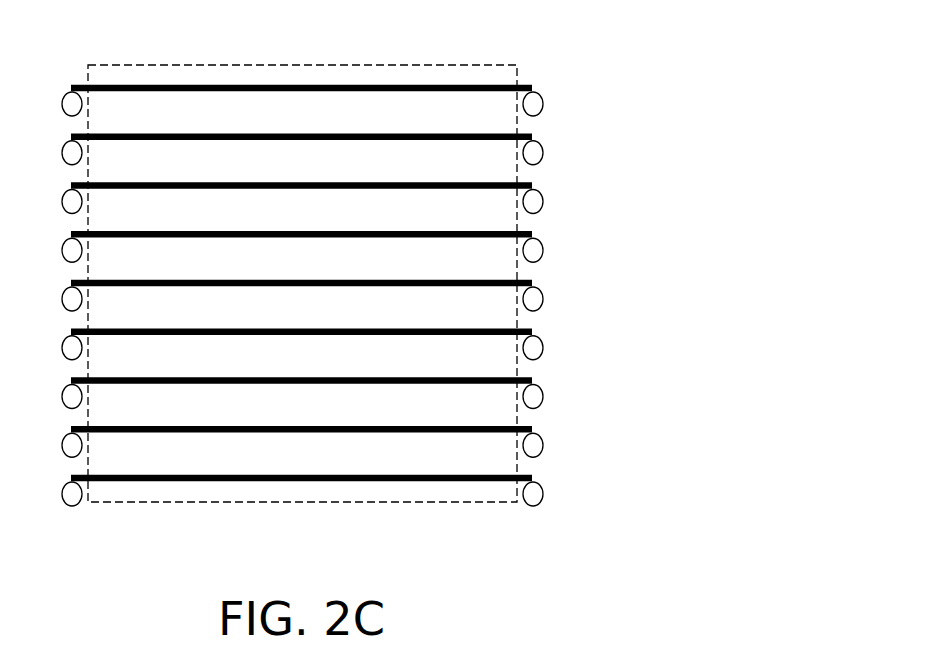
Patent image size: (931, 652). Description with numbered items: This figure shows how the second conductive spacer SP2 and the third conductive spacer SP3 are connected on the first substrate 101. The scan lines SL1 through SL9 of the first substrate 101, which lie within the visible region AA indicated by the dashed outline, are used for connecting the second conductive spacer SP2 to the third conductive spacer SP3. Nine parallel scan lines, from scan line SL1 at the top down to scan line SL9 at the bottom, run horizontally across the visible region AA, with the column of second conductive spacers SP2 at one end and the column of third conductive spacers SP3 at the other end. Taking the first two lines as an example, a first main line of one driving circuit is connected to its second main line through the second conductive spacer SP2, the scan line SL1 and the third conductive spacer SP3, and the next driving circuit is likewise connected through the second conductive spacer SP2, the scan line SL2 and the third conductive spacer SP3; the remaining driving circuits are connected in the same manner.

The first substrate 101 is at (652, 31).
The visible region AA is at (122, 65).
The scan line SL1 is at (333, 88).
The scan line SL2 is at (403, 137).
The scan line SL9 is at (433, 482).
The third conductive spacer SP3 is at (71, 512).
The second conductive spacer SP2 is at (534, 510).